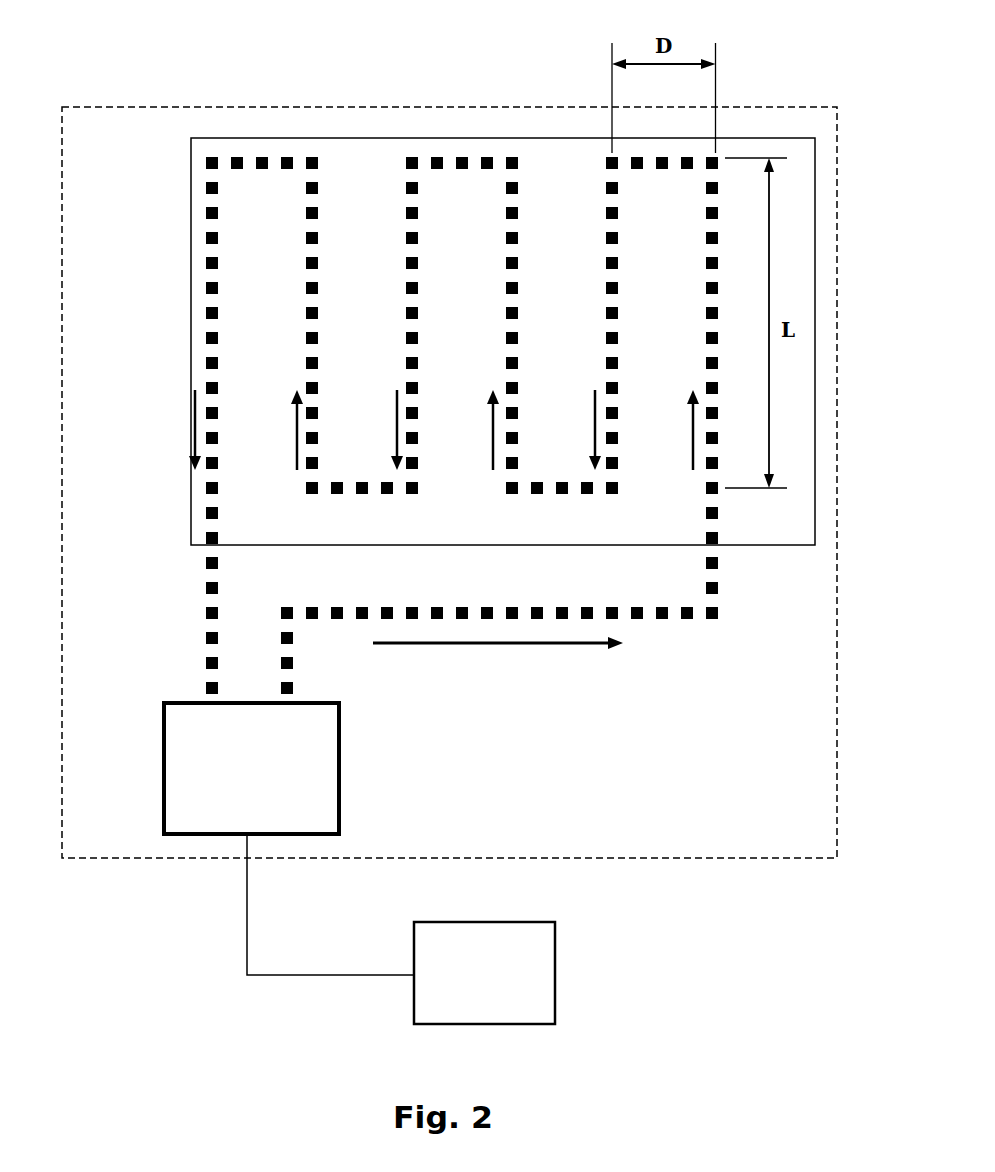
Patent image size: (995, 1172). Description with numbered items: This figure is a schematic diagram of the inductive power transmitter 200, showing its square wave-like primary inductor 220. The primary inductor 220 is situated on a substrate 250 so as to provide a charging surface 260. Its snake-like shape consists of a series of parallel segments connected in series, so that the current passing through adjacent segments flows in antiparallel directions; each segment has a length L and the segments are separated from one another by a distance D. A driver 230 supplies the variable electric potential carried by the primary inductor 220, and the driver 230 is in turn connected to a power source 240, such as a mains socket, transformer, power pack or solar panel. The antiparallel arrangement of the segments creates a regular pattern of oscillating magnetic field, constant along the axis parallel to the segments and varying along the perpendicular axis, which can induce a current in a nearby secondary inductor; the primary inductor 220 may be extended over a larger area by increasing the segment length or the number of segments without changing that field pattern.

The inductive power transmitter 200 is at (137, 130).
The primary inductor 220 is at (207, 260).
The driver 230 is at (163, 808).
The power source 240 is at (553, 999).
The substrate 250 is at (364, 150).
The charging surface 260 is at (257, 140).